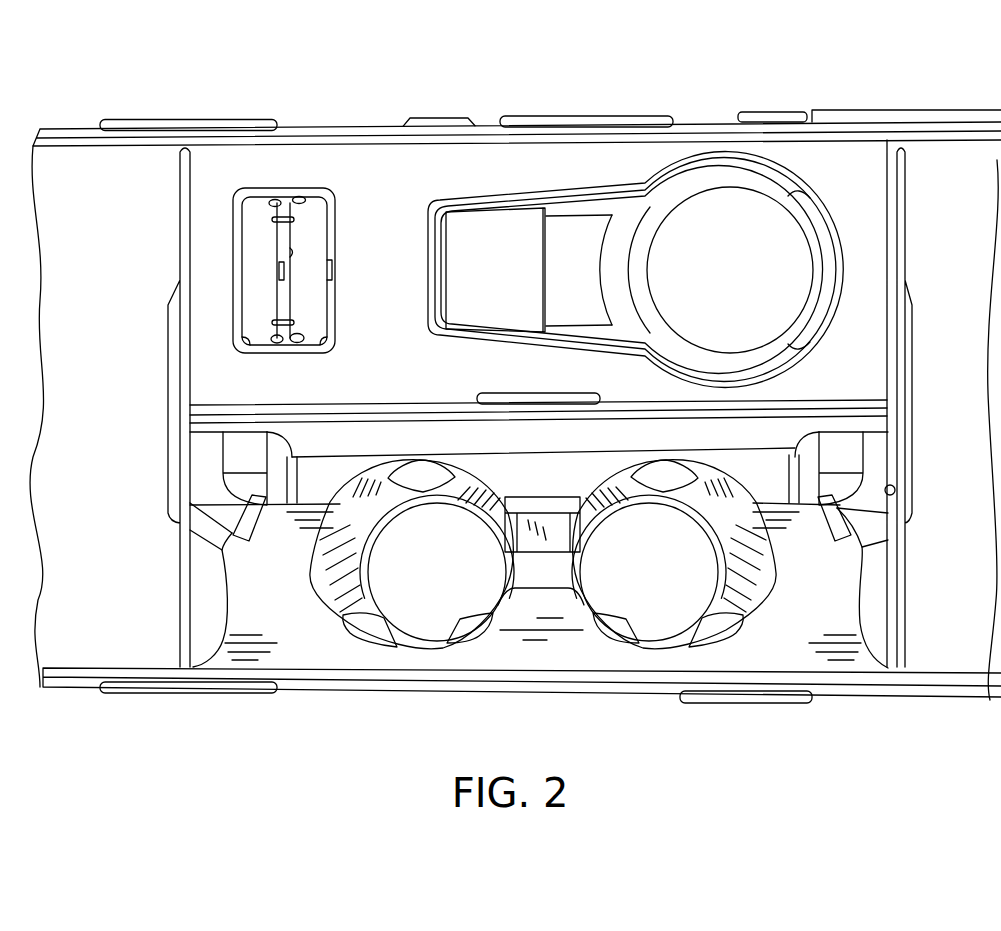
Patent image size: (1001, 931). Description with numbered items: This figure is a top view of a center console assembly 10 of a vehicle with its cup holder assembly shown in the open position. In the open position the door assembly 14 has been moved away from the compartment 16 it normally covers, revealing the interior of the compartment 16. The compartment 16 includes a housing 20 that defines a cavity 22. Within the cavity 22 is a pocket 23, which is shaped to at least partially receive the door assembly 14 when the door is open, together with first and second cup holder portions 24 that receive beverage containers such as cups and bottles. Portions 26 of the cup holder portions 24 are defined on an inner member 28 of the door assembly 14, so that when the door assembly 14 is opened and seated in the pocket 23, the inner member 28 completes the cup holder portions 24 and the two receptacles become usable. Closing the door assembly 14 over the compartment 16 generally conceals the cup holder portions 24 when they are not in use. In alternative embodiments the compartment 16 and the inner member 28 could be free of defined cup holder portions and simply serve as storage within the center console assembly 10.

The center console assembly 10 is at (130, 80).
The door assembly 14 is at (280, 522).
The compartment 16 is at (808, 587).
The housing 20 is at (867, 625).
The cavity 22 is at (527, 597).
The pocket 23 is at (193, 458).
The cup holder portions 24 is at (430, 623).
The portions 26 is at (373, 477).
The inner member 28 is at (553, 433).